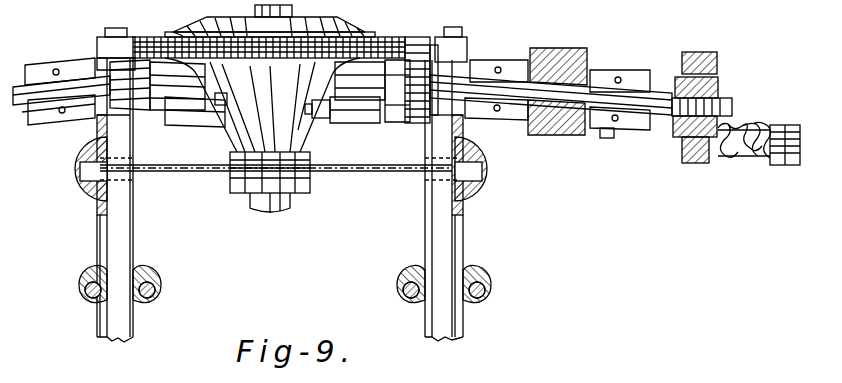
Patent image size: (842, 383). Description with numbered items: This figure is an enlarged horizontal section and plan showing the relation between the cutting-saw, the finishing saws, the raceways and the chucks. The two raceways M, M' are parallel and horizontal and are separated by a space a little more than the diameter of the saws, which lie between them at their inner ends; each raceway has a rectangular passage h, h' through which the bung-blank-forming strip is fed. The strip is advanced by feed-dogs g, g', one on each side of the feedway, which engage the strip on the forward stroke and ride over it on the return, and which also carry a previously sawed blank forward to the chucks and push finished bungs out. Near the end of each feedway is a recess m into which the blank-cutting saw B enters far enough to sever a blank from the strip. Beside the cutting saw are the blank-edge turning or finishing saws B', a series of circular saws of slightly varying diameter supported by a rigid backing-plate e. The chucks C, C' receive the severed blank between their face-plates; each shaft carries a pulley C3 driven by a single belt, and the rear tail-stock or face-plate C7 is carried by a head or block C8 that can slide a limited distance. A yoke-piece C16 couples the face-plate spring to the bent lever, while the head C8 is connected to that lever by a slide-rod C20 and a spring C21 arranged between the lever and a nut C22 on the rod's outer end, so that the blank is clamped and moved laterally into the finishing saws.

The raceway M is at (146, 197).
The raceway M' is at (470, 201).
The rectangular passage h is at (130, 345).
The post base h' is at (431, 354).
The feed-dog g is at (289, 287).
The feed-dog g' is at (224, 299).
The recess m is at (88, 175).
The blank-cutting saw B is at (276, 180).
The blank-edge turning or finishing saws B' is at (269, 109).
The rigid backing-plate e is at (312, 17).
The chuck C' is at (342, 90).
The tail-stock or face-plate C7 is at (145, 112).
The head or block C8 is at (185, 128).
The chuck C is at (451, 76).
The pulley C3 is at (572, 52).
The yoke-piece C16 is at (717, 62).
The slide-rod C20 is at (730, 160).
The spring C21 is at (758, 160).
The nut C22 is at (780, 125).